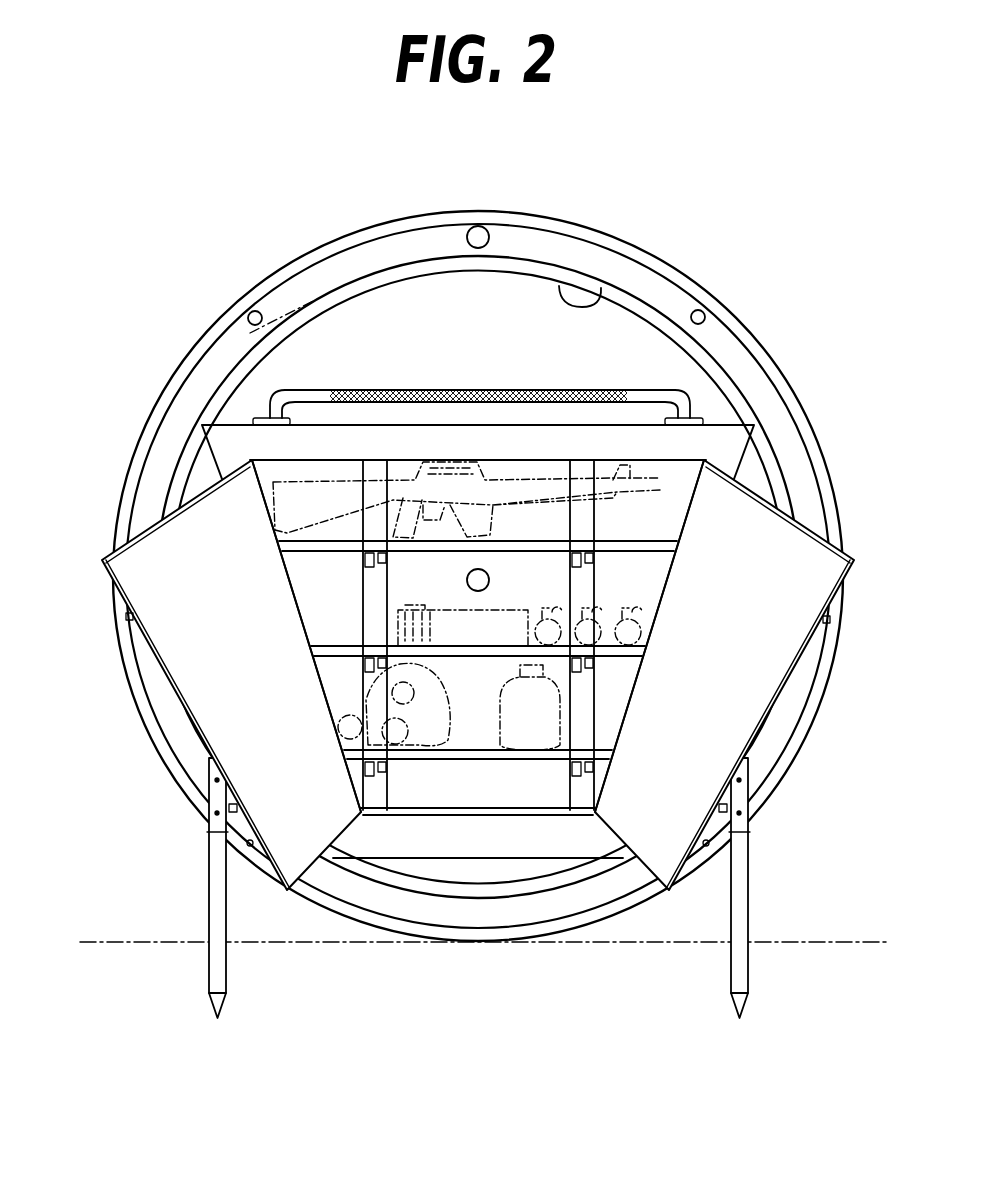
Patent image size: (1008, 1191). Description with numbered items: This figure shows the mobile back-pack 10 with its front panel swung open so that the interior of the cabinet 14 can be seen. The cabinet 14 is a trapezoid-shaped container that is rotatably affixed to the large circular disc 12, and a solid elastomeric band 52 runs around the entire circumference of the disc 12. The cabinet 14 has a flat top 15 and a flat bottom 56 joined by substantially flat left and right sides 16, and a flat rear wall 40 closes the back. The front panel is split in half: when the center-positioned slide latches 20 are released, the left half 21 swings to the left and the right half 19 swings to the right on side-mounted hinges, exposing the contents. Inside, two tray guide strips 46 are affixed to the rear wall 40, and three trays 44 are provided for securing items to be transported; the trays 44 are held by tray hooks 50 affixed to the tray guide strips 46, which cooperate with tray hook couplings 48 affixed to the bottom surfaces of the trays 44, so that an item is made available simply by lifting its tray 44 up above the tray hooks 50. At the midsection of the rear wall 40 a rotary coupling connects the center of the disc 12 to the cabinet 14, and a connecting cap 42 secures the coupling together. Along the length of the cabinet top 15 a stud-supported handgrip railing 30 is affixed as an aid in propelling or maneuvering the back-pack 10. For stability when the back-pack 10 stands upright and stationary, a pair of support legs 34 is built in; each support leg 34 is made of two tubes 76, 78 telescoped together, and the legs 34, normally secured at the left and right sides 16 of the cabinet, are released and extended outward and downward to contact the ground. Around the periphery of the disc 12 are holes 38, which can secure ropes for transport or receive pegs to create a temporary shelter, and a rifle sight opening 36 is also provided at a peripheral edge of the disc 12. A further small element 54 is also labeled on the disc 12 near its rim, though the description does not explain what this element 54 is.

The mobile back-pack 10 is at (212, 250).
The disc 12 is at (348, 262).
The cabinet 14 is at (730, 418).
The flat top 15 is at (230, 422).
The left and right sides 16 is at (491, 644).
The right half of the front panel 19 is at (790, 570).
The slide latches 20 is at (128, 619).
The left half of the front panel 21 is at (192, 673).
The handgrip railing 30 is at (478, 390).
The support legs 34 is at (228, 988).
The rifle sight opening 36 is at (495, 225).
The holes 38 is at (247, 315).
The rear wall 40 is at (652, 478).
The connecting cap 42 is at (467, 580).
The trays 44 is at (645, 530).
The tray guide strips 46 is at (366, 470).
The tray hook couplings 48 is at (570, 770).
The tray hooks 50 is at (388, 762).
The elastomeric band 52 is at (180, 360).
The bracket 54 is at (600, 298).
The bottom 56 is at (545, 860).
The tube 76 is at (484, 896).
The tube 78 is at (212, 795).